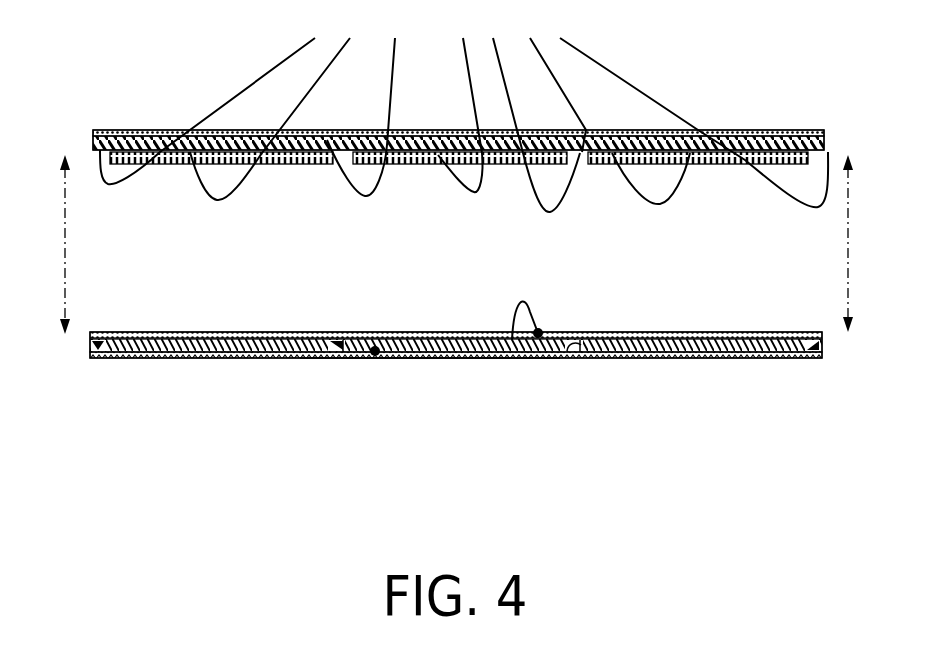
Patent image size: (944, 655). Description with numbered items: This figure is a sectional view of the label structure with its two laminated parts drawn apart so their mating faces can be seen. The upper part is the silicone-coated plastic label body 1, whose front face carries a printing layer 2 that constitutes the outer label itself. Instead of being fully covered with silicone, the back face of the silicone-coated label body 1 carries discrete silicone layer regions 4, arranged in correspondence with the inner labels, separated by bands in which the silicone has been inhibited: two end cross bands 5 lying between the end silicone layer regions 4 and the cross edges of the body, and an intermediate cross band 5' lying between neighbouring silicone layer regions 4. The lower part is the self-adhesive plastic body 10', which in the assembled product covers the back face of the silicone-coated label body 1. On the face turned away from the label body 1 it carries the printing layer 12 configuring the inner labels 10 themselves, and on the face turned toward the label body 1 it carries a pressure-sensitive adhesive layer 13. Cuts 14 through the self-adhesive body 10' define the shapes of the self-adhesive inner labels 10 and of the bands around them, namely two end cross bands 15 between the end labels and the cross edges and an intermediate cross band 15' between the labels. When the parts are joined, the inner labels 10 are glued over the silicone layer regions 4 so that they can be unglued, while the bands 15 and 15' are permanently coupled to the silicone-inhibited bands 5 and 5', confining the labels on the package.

The silicone-coated plastic label body 1 is at (322, 131).
The printing layer 2 is at (414, 130).
The silicone layer regions 4 is at (440, 108).
The end cross bands 5 is at (464, 110).
The intermediate cross band 5' is at (453, 112).
The self-adhesive inner labels 10 is at (456, 406).
The self-adhesive plastic body 10' is at (430, 419).
The printing layer 12 is at (376, 355).
The pressure-sensitive adhesive layer 13 is at (512, 340).
The cuts 14 is at (328, 356).
The end cross bands 15 is at (451, 410).
The intermediate cross band 15' is at (470, 410).